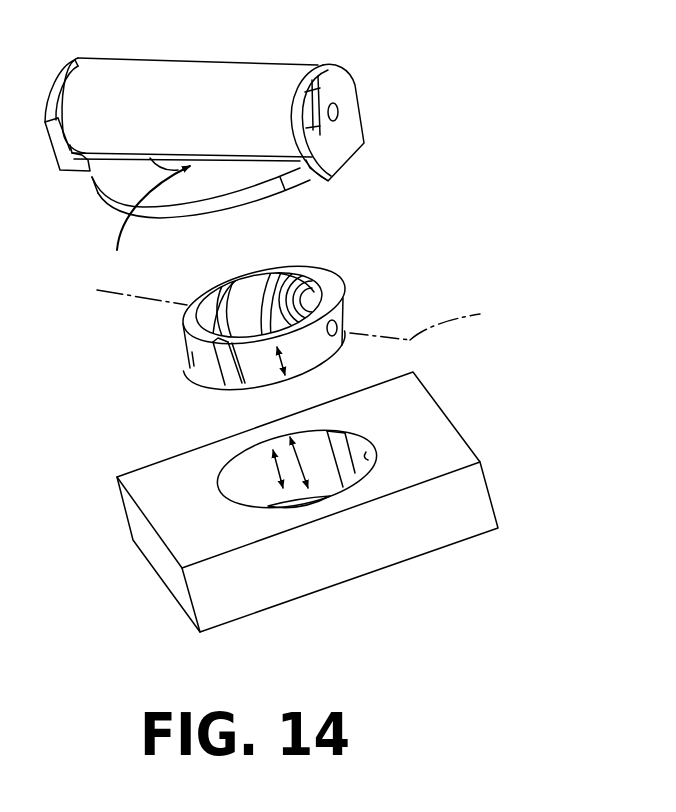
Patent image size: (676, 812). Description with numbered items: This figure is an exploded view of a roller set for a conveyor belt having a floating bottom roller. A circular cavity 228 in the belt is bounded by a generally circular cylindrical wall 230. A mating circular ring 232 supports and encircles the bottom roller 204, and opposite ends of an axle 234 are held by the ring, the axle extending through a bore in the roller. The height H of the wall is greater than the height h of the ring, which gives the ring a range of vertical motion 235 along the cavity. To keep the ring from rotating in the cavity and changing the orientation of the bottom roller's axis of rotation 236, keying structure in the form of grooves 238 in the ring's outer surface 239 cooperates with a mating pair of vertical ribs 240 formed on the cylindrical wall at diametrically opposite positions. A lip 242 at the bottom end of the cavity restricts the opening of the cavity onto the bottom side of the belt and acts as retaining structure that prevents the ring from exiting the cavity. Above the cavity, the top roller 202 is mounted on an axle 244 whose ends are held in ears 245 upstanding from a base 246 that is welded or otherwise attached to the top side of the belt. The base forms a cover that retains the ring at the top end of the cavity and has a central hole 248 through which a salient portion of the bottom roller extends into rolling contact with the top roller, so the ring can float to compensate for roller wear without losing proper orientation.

The top roller 202 is at (248, 70).
The bottom roller 204 is at (253, 282).
The circular cavity 228 is at (252, 478).
The cylindrical wall 230 is at (366, 452).
The circular ring 232 is at (338, 305).
The axle 234 is at (337, 336).
The range of vertical motion 235 is at (282, 488).
The axis of rotation 236 is at (311, 315).
The grooves 238 is at (227, 363).
The outer surface 239 is at (193, 348).
The vertical ribs 240 is at (348, 470).
The lip 242 is at (296, 504).
The axle 244 is at (340, 112).
The ears 245 is at (340, 153).
The base 246 is at (257, 178).
The central hole 248 is at (139, 219).
The height of the wall H is at (330, 440).
The height of the ring h is at (288, 357).